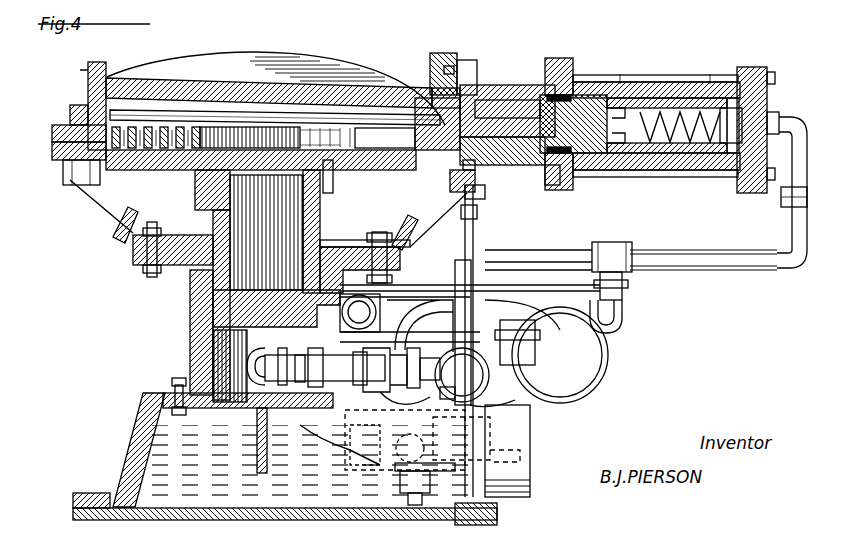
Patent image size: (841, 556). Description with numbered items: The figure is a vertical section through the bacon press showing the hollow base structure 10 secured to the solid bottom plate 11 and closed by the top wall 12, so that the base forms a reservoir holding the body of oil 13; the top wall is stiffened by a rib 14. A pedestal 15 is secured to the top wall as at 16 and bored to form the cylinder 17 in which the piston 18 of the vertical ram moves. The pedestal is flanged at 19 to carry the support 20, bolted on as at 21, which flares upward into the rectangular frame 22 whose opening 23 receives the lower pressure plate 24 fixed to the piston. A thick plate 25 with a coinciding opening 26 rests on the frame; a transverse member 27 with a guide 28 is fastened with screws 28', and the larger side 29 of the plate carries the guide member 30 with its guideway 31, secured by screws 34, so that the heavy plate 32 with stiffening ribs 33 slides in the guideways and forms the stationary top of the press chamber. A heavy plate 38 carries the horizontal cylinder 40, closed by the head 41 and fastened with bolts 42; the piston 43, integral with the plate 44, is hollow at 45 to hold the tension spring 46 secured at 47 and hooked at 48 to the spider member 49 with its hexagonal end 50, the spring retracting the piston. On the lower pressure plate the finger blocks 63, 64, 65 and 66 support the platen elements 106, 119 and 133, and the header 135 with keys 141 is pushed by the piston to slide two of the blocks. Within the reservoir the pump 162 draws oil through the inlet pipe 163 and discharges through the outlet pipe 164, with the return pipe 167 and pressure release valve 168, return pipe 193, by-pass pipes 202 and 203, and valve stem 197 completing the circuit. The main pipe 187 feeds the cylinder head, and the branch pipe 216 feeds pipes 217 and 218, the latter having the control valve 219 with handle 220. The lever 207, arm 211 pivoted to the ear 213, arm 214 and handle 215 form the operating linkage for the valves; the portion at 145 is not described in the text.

The hollow base structure 10 is at (143, 426).
The bottom plate 11 is at (73, 502).
The top wall 12 is at (230, 410).
The body of oil 13 is at (178, 495).
The stiffening rib 14 is at (310, 442).
The pedestal 15 is at (190, 296).
The securing means 16 is at (176, 380).
The cylinder 17 is at (225, 357).
The piston 18 is at (220, 312).
The flange 19 is at (133, 253).
The support 20 is at (110, 216).
The bolts 21 is at (156, 222).
The rectangular frame 22 is at (52, 152).
The rectangular opening 23 is at (72, 185).
The lower pressure plate 24 is at (145, 150).
The thick plate 25 is at (52, 132).
The rectangular opening 26 is at (118, 121).
The transverse member 27 is at (88, 70).
The guide 28 is at (110, 94).
The screws 28' is at (59, 106).
The larger side of plate 29 is at (545, 176).
The guide member 30 is at (465, 80).
The guideway 31 is at (450, 88).
The heavy plate 32 is at (238, 90).
The stiffening ribs 33 is at (296, 54).
The screws 34 is at (448, 62).
The heavy plate 38 is at (560, 58).
The cylinder 40 is at (636, 84).
The head 41 is at (750, 67).
The bolts 42 is at (700, 75).
The piston 43 is at (595, 95).
The plate 44 is at (505, 95).
The hollow opening 45 is at (676, 143).
The tension spring 46 is at (660, 143).
The spring securing point 47 is at (618, 145).
The hook 48 is at (733, 150).
The spider member 49 is at (775, 112).
The hexagonal end 50 is at (782, 118).
The finger block 63 is at (362, 173).
The finger block 64 is at (398, 173).
The finger block 65 is at (112, 178).
The finger block 66 is at (178, 150).
The lowermost platen element 106 is at (175, 122).
The platen element 119 is at (310, 122).
The uppermost platen element 133 is at (200, 125).
The header 135 is at (415, 118).
The keys 141 is at (417, 110).
The bore 145 is at (478, 110).
The pump 162 is at (400, 487).
The inlet pipe 163 is at (412, 506).
The outlet pipe 164 is at (405, 438).
The return pipe 167 is at (350, 432).
The pressure release valve 168 is at (255, 293).
The main pipe 187 is at (741, 250).
The pipe 193 is at (380, 352).
The valve stem 197 is at (520, 400).
The pipe 202 is at (585, 372).
The pipe 203 is at (458, 439).
The lever 207 is at (455, 274).
The arm 211 is at (490, 226).
The ear 213 is at (490, 190).
The arm 214 is at (438, 220).
The handle 215 is at (478, 190).
The branch pipe 216 is at (630, 292).
The pipe 217 is at (550, 286).
The pipe 218 is at (594, 332).
The control valve 219 is at (417, 404).
The manually operable handle 220 is at (316, 352).